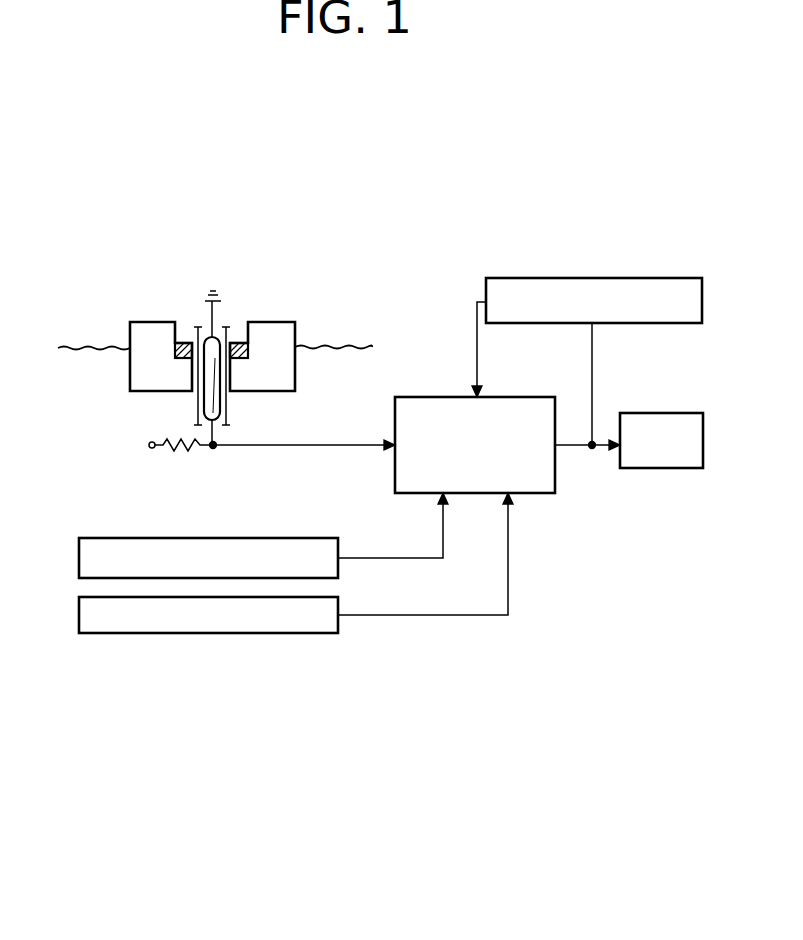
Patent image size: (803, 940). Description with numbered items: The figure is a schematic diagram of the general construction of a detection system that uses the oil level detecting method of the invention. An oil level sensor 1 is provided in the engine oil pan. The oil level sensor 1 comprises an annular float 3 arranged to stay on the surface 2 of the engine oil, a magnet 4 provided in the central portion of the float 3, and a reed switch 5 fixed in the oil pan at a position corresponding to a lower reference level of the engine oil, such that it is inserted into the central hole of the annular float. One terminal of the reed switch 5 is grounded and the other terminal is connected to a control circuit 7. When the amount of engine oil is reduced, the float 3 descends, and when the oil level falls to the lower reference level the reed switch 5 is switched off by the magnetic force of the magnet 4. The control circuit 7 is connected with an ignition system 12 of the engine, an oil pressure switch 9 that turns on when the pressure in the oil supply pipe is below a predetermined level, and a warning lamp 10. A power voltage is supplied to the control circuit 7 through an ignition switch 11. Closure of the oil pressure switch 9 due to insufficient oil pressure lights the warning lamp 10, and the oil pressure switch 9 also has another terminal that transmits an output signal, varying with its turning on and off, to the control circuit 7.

The oil level sensor 1 is at (352, 318).
The surface of the engine oil 2 is at (365, 347).
The annular float 3 is at (130, 373).
The magnet 4 is at (185, 338).
The reed switch 5 is at (203, 398).
The control circuit 7 is at (500, 397).
The oil pressure switch 9 is at (665, 278).
The warning lamp 10 is at (667, 468).
The ignition switch 11 is at (79, 568).
The ignition system 12 is at (79, 623).